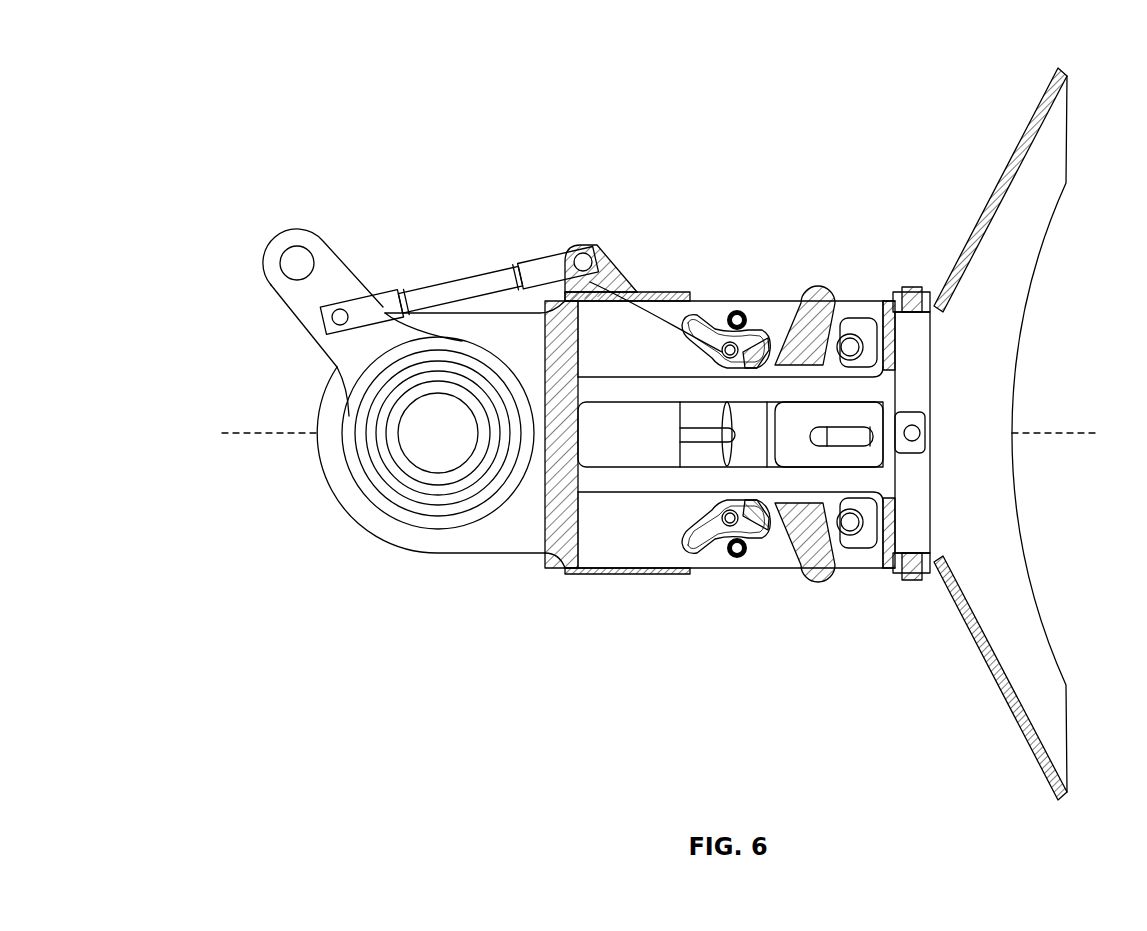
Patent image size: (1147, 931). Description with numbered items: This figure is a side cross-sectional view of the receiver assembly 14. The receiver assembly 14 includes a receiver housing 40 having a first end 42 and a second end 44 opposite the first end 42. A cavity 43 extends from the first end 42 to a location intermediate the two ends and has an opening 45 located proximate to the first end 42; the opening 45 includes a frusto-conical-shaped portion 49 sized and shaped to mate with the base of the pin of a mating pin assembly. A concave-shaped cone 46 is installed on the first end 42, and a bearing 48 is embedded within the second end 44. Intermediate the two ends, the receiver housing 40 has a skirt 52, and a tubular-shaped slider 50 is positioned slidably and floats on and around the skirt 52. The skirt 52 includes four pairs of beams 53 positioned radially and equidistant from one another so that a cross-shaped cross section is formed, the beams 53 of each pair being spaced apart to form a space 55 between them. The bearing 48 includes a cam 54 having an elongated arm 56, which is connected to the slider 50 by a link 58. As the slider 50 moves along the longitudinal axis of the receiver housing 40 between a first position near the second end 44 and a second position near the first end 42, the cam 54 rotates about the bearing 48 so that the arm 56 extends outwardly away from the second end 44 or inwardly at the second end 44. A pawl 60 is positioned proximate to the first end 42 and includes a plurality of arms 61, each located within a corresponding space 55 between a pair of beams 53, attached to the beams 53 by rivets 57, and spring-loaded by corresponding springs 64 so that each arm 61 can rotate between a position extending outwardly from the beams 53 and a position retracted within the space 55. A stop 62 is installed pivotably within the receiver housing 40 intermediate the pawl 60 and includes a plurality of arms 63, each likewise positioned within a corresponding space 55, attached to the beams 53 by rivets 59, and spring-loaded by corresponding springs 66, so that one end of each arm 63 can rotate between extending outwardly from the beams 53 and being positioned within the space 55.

The receiver assembly 14 is at (661, 415).
The receiver housing 40 is at (553, 503).
The first end 42 is at (905, 580).
The cavity 43 is at (623, 447).
The second end 44 is at (318, 420).
The opening 45 is at (917, 323).
The concave-shaped cone 46 is at (1020, 220).
The bearing 48 is at (604, 442).
The frusto-conical-shaped portion 49 is at (917, 390).
The slider 50 is at (573, 573).
The skirt 52 is at (775, 572).
The beams 53 is at (563, 280).
The cam 54 is at (305, 300).
The space 55 is at (478, 487).
The elongated arm 56 is at (290, 243).
The rivets 57 is at (847, 343).
The link 58 is at (462, 290).
The rivets 59 is at (613, 357).
The pawl 60 is at (817, 290).
The arms 61 is at (826, 334).
The stop 62 is at (687, 543).
The arms 63 is at (688, 323).
The springs 64 is at (793, 333).
The springs 66 is at (730, 350).